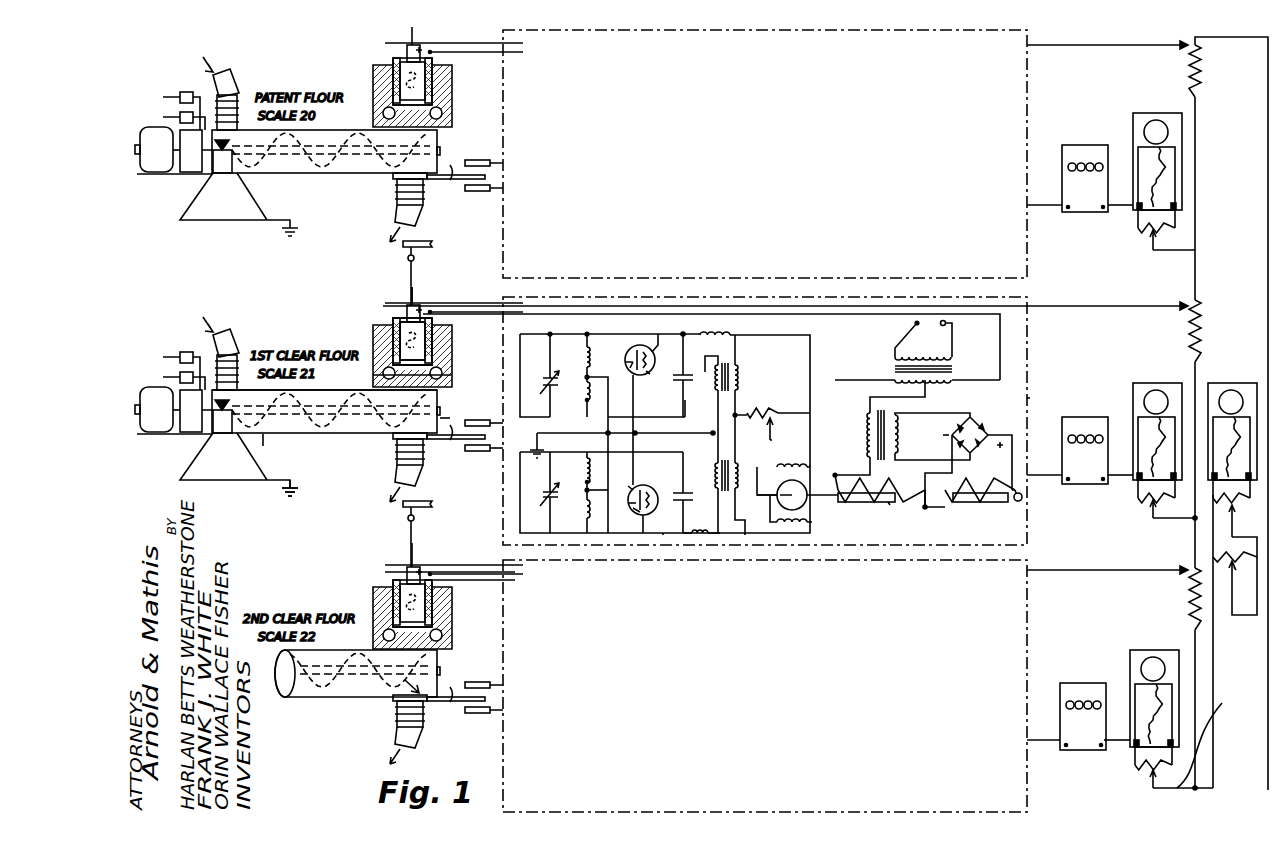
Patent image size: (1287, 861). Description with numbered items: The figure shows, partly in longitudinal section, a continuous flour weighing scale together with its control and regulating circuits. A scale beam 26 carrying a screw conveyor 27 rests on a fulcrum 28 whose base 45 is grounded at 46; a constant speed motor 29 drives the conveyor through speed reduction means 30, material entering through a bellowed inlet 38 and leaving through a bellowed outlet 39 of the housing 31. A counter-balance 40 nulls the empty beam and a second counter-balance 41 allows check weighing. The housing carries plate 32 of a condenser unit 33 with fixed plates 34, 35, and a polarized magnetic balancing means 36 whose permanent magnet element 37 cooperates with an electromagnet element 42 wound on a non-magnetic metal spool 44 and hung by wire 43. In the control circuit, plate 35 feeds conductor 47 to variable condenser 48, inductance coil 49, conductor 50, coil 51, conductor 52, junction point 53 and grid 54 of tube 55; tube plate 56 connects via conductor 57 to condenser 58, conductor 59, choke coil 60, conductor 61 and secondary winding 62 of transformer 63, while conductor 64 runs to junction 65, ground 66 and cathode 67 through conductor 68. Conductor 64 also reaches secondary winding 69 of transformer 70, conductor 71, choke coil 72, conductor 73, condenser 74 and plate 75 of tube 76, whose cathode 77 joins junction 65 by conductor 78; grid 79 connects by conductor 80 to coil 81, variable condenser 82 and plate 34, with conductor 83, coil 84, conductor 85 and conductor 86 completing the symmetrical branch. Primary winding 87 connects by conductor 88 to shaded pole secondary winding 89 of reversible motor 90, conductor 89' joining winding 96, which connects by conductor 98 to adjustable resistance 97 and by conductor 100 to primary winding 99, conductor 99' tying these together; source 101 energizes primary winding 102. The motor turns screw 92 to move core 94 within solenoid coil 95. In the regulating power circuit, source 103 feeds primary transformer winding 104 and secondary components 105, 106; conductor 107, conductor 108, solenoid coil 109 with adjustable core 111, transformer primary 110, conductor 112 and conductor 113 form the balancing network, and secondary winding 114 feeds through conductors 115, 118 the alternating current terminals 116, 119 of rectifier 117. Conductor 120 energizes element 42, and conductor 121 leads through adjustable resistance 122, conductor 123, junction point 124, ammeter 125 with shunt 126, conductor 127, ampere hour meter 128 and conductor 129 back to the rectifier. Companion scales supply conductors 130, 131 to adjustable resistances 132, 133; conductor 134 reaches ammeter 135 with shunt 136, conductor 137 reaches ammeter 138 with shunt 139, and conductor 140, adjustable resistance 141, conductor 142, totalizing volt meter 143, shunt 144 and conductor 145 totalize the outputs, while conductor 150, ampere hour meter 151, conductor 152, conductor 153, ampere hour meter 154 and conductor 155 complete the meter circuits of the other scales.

The scale beam 26 is at (346, 345).
The screw conveyor 27 is at (308, 434).
The fulcrum 28 is at (222, 434).
The constant speed motor 29 is at (158, 434).
The speed reduction means 30 is at (186, 432).
The housing 31 is at (272, 448).
The condenser plate 32 is at (451, 405).
The condenser unit 33 is at (458, 448).
The fixed condenser plate 34 is at (477, 418).
The fixed condenser plate 35 is at (477, 453).
The polarized magnetic balancing means 36 is at (466, 340).
The permanent magnet element 37 is at (448, 379).
The bellowed inlet 38 is at (223, 338).
The bellowed outlet 39 is at (396, 474).
The counter-balance 40 is at (176, 373).
The second counter-balance 41 is at (185, 350).
The electromagnet element 42 is at (417, 309).
The wire 43 is at (409, 280).
The non-magnetic metal spool 44 is at (393, 328).
The base 45 is at (192, 469).
The ground 46 is at (294, 500).
The conductor 47 is at (503, 513).
The variable condenser 48 is at (503, 513).
The inductance coil 49 is at (584, 512).
The conductor 50 is at (584, 482).
The inductance coil 51 is at (584, 468).
The conductor 52 is at (617, 485).
The junction point 53 is at (595, 431).
The grid 54 is at (632, 509).
The tube 55 is at (651, 478).
The tube plate 56 is at (650, 513).
The conductor 57 is at (663, 535).
The condenser 58 is at (686, 490).
The conductor 59 is at (672, 455).
The choke coil 60 is at (712, 540).
The conductor 61 is at (718, 520).
The secondary winding 62 is at (712, 461).
The transformer 63 is at (727, 455).
The conductor 64 is at (706, 431).
The junction 65 is at (637, 432).
The ground 66 is at (531, 446).
The cathode 67 is at (626, 502).
The conductor 68 is at (630, 487).
The secondary winding 69 is at (712, 368).
The transformer 70 is at (750, 367).
The conductor 71 is at (737, 346).
The choke coil 72 is at (727, 330).
The conductor 73 is at (689, 326).
The condenser 74 is at (679, 375).
The plate 75 is at (660, 334).
The tube 76 is at (653, 380).
The cathode 77 is at (624, 362).
The conductor 78 is at (642, 409).
The grid 79 is at (630, 350).
The conductor 80 is at (598, 327).
The inductance coil 81 is at (582, 350).
The variable condenser 82 is at (542, 375).
The conductor 83 is at (577, 399).
The inductance coil 84 is at (584, 400).
The conductor 85 is at (608, 395).
The conductor 86 is at (686, 410).
The primary winding 87 is at (746, 483).
The conductor 88 is at (745, 535).
The shaded pole secondary winding 89 is at (790, 530).
The conductor 89' is at (800, 522).
The reversible motor 90 is at (803, 502).
The screw 92 is at (836, 483).
The core 94 is at (868, 506).
The solenoid coil 95 is at (890, 505).
The shaded pole secondary winding 96 is at (810, 465).
The adjustable resistance 97 is at (781, 414).
The conductor 98 is at (772, 427).
The primary winding 99 is at (771, 404).
The conductor 99' is at (747, 427).
The conductor 100 is at (765, 427).
The alternating current source 101 is at (756, 480).
The primary winding 102 is at (776, 465).
The alternating current supply source 103 is at (954, 331).
The primary transformer winding 104 is at (951, 356).
The secondary winding component 105 is at (894, 369).
The secondary winding component 106 is at (953, 380).
The conductor 107 is at (846, 374).
The conductor 108 is at (925, 510).
The solenoid coil 109 is at (970, 505).
The transformer primary 110 is at (866, 428).
The adjustable core 111 is at (1000, 505).
The conductor 112 is at (1022, 398).
The conductor 113 is at (868, 397).
The secondary winding 114 is at (902, 428).
The conductor 115 is at (900, 452).
The alternating current terminal 116 is at (975, 456).
The rectifier 117 is at (964, 422).
The conductor 118 is at (940, 412).
The alternating current terminal 119 is at (982, 422).
The conductor 120 is at (856, 313).
The conductor 121 is at (847, 307).
The adjustable resistance 122 is at (1200, 315).
The conductor 123 is at (1197, 367).
The junction point 124 is at (1190, 522).
The ammeter 125 is at (1153, 376).
The shunt 126 is at (1143, 515).
The conductor 127 is at (1117, 488).
The ampere hour meter 128 is at (1081, 492).
The conductor 129 is at (948, 476).
The conductor 130 is at (462, 38).
The conductor 131 is at (455, 573).
The adjustable resistance 132 is at (1201, 68).
The adjustable resistance 133 is at (1190, 613).
The conductor 134 is at (1198, 125).
The ammeter 135 is at (1157, 107).
The shunt 136 is at (1146, 244).
The conductor 137 is at (1197, 700).
The ammeter 138 is at (1151, 640).
The shunt 139 is at (1145, 775).
The conductor 140 is at (1266, 208).
The adjustable resistance 141 is at (1236, 570).
The conductor 142 is at (1257, 545).
The totalizing volt meter 143 is at (1236, 383).
The shunt 144 is at (1238, 560).
The conductor 145 is at (1213, 668).
The conductor 150 is at (1042, 207).
The ampere hour meter 151 is at (1081, 219).
The conductor 152 is at (1120, 207).
The conductor 153 is at (1043, 746).
The ampere hour meter 154 is at (1084, 673).
The conductor 155 is at (1117, 745).